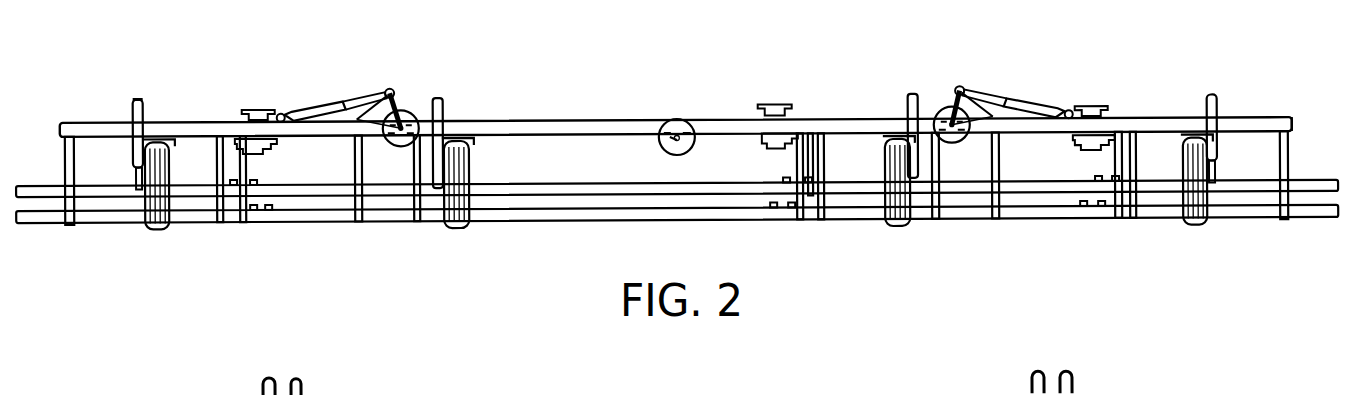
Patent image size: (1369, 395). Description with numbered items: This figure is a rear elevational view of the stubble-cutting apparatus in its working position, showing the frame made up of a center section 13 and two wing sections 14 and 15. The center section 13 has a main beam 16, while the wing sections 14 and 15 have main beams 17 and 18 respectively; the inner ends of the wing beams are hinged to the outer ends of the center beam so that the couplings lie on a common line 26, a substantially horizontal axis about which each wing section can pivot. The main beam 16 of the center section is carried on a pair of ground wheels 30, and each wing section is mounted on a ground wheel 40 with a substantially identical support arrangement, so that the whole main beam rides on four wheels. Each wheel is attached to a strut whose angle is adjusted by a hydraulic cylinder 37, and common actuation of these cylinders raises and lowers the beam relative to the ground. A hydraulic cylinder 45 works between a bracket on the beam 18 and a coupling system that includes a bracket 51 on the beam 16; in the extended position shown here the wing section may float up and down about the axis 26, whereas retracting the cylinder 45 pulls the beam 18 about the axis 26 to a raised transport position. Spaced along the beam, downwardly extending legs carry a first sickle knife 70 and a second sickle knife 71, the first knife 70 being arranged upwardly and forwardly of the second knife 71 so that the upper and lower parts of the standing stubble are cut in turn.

The center section 13 is at (674, 90).
The wing section 14 is at (1154, 100).
The wing section 15 is at (216, 88).
The main beam 16 is at (605, 120).
The main beam 17 is at (1243, 118).
The main beam 18 is at (205, 121).
The common line 26 is at (406, 112).
The ground wheel 30 is at (466, 233).
The hydraulic cylinder 37 is at (133, 108).
The ground wheel 40 is at (158, 232).
The hydraulic cylinder 45 is at (318, 108).
The leg 51 is at (1290, 166).
The first sickle knife 70 is at (593, 181).
The second sickle knife 71 is at (667, 221).